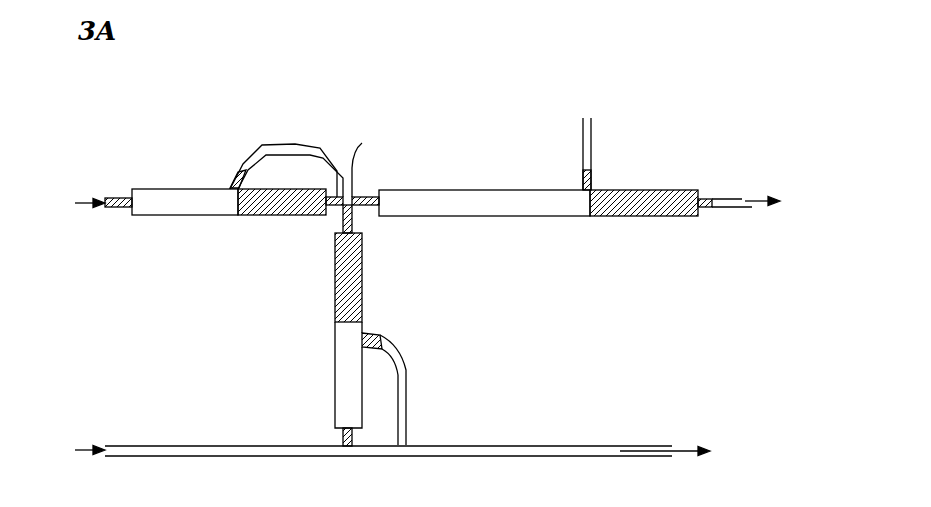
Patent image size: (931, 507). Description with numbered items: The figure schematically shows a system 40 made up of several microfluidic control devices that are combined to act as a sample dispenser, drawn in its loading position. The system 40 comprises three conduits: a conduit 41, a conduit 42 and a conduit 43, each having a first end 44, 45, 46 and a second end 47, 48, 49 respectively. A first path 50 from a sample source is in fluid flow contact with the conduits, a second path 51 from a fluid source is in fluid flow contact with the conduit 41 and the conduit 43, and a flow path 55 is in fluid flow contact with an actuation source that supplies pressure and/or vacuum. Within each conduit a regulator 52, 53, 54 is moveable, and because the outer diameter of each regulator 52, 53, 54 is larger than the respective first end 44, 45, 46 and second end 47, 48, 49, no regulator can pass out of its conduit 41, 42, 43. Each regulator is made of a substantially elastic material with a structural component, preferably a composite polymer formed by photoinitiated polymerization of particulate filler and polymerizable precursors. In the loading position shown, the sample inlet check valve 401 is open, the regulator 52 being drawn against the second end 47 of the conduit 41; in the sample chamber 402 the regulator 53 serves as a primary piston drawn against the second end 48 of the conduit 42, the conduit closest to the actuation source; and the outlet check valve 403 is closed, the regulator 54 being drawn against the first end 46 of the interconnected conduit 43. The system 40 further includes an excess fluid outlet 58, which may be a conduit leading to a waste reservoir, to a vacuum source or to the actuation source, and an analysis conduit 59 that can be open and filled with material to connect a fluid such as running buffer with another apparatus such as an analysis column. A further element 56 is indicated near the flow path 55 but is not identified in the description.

The system 40 is at (320, 47).
The sample inlet check valve 401 is at (222, 143).
The sample chamber 402 is at (484, 194).
The outlet check valve 403 is at (469, 389).
The conduit 41 is at (157, 215).
The conduit 42 is at (458, 200).
The conduit 43 is at (342, 403).
The first end 44 is at (120, 209).
The first end 45 is at (356, 208).
The first end 46 is at (336, 226).
The second end 47 is at (336, 174).
The second end 48 is at (708, 210).
The second end 49 is at (343, 438).
The first path 50 is at (75, 205).
The second path 51 is at (377, 451).
The regulator 52 is at (252, 205).
The regulator 53 is at (619, 212).
The regulator 54 is at (363, 286).
The flow path 55 is at (779, 206).
The outlet tube 56 is at (733, 200).
The excess fluid outlet 58 is at (592, 148).
The analysis conduit 59 is at (445, 445).